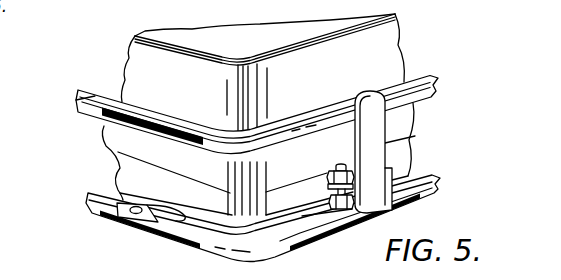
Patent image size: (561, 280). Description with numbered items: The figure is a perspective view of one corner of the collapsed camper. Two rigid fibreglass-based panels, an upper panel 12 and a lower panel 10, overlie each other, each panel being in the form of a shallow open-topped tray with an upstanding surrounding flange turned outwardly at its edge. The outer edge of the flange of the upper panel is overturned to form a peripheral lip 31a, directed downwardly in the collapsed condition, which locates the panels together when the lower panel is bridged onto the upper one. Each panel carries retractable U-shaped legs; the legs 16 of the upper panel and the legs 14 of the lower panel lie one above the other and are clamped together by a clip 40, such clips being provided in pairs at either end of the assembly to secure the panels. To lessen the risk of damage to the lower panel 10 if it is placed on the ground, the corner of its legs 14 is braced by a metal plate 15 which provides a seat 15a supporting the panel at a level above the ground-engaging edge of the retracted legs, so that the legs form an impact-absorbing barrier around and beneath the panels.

The rigid panel 12 is at (167, 60).
The retractable U-shaped legs 16 is at (100, 103).
The peripheral lip 31a is at (118, 139).
The rigid panel 10 is at (147, 170).
The retractable U-shaped legs 14 is at (98, 209).
The seat 15a is at (176, 238).
The metal plate 15 is at (302, 211).
The clips 40 is at (372, 130).